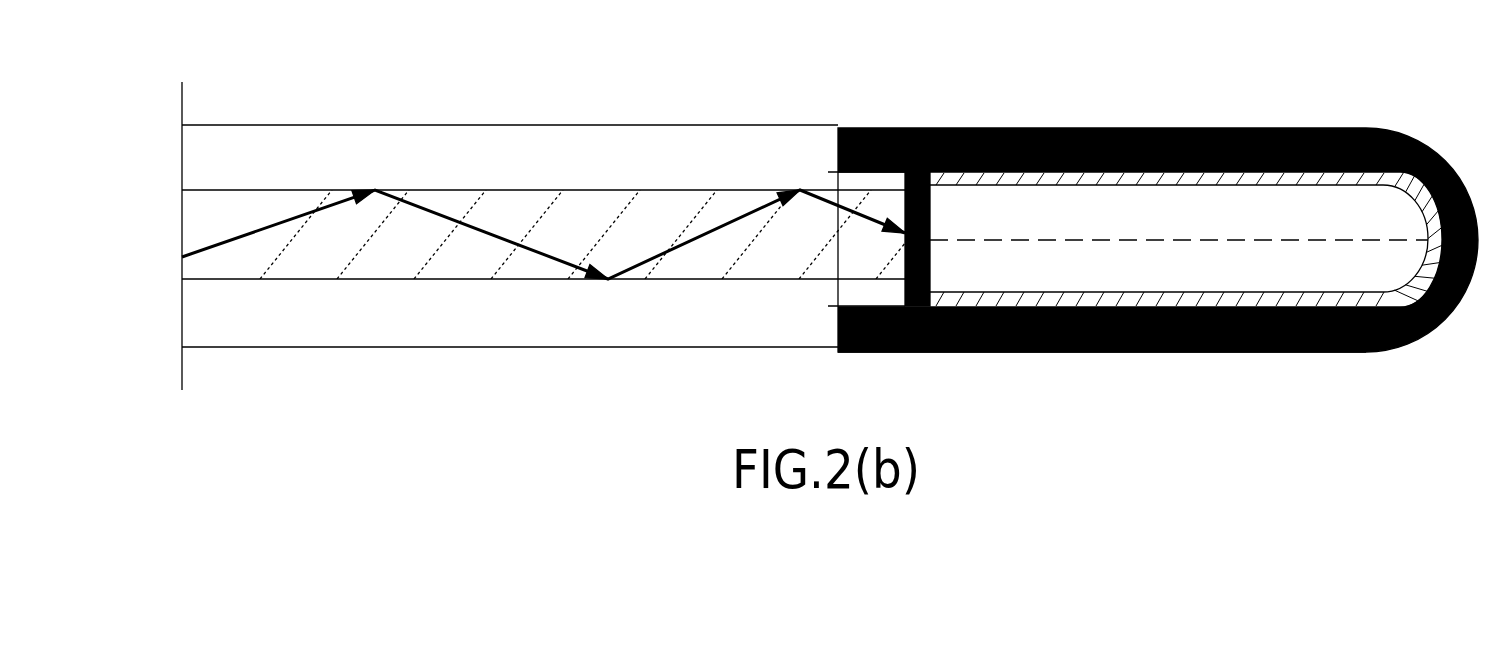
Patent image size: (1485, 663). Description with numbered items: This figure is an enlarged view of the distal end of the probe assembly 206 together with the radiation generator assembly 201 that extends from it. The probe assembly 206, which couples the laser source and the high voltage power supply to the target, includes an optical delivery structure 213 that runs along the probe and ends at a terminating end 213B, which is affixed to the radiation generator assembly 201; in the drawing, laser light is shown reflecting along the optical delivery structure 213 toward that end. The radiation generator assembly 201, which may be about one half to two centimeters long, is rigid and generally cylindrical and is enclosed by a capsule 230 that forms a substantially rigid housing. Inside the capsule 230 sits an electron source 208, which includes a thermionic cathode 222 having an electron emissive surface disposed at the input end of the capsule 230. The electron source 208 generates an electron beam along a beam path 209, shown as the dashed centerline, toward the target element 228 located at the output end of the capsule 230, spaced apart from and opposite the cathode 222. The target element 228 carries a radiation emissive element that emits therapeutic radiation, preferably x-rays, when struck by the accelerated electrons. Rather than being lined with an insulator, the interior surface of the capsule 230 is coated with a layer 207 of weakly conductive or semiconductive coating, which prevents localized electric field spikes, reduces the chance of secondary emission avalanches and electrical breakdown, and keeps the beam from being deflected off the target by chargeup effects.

The radiation generator assembly 201 is at (1270, 378).
The probe assembly 206 is at (508, 410).
The layer of semiconductor coating 207 is at (968, 180).
The electron source 208 is at (900, 267).
The beam path 209 is at (1203, 240).
The optical delivery structure 213 is at (316, 190).
The terminating end 213B is at (883, 280).
The thermionic cathode 222 is at (903, 175).
The target element 228 is at (1433, 240).
The capsule 230 is at (1203, 352).